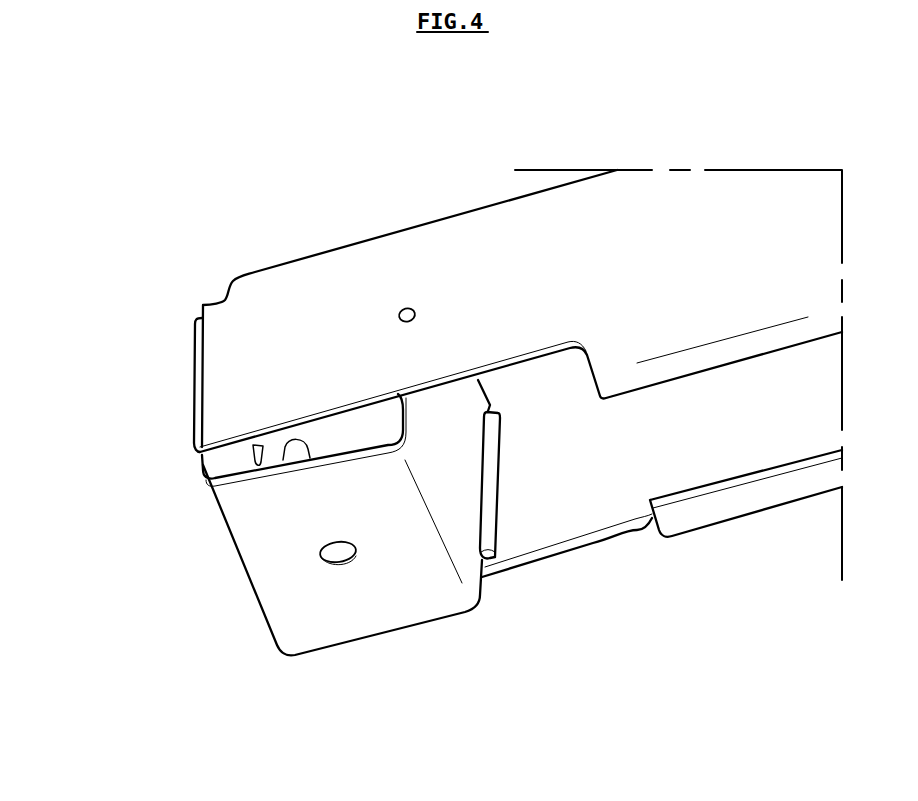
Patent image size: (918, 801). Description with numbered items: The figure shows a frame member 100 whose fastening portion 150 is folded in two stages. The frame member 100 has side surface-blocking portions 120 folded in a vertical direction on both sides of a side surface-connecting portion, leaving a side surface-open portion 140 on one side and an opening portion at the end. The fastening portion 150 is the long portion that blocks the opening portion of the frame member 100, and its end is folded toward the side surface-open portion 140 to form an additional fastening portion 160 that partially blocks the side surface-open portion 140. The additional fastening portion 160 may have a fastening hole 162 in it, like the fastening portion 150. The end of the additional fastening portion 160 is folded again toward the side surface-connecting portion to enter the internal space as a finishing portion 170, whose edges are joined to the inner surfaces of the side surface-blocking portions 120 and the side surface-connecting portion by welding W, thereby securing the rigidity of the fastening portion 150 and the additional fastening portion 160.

The frame member 100 is at (308, 243).
The side surface-blocking portion 120 is at (380, 267).
The side surface-open portion 140 is at (577, 463).
The fastening portion 150 is at (227, 470).
The additional fastening portion 160 is at (350, 613).
The fastening hole 162 is at (343, 550).
The finishing portion 170 is at (447, 430).
The welding W is at (493, 513).